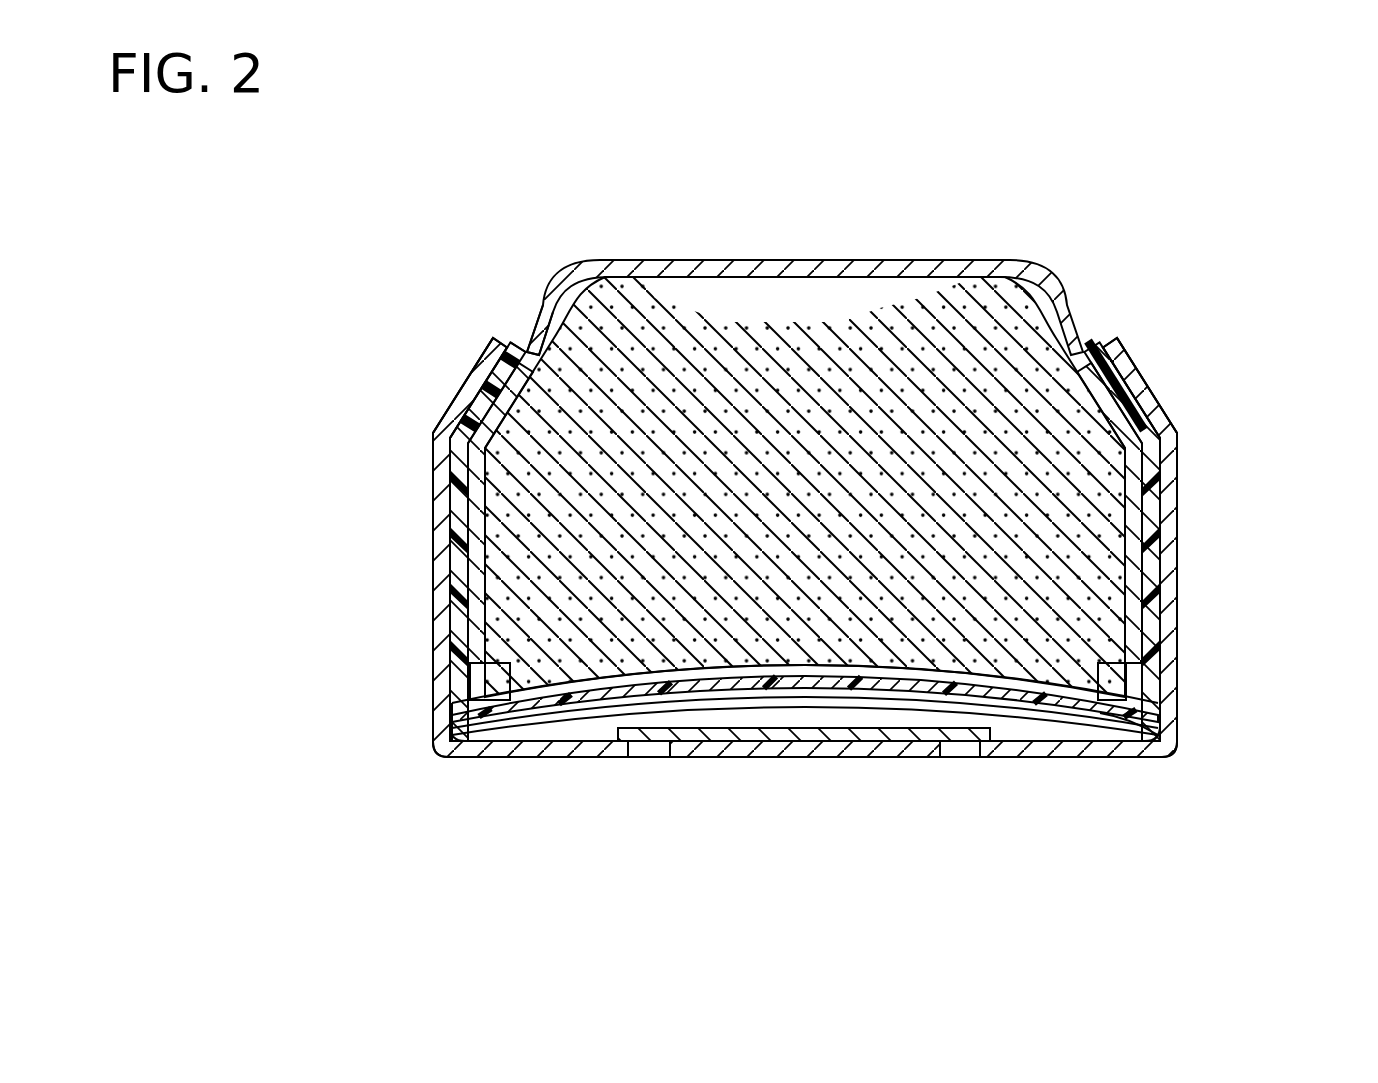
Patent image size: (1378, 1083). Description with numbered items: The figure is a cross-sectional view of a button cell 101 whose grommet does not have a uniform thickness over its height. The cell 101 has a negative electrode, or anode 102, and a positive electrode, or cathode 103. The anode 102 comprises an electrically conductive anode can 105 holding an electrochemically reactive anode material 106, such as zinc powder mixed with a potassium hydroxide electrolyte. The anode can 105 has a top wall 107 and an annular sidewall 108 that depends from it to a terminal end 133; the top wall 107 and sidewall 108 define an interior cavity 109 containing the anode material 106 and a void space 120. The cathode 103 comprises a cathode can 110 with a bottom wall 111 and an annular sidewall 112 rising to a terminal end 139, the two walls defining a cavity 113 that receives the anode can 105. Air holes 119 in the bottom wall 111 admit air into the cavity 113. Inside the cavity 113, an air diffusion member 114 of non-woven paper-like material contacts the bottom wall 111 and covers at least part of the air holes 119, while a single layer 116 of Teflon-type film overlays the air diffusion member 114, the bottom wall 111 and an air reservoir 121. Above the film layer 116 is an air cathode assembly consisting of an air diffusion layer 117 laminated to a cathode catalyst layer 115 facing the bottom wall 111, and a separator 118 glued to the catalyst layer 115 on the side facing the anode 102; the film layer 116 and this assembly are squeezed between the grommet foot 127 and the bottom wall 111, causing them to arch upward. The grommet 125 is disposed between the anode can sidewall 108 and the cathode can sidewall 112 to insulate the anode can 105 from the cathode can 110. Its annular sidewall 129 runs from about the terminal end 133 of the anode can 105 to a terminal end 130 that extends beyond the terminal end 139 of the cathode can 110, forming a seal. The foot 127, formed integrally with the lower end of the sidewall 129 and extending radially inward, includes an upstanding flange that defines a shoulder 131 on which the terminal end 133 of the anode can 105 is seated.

The cell 101 is at (1158, 243).
The negative electrode (anode) 102 is at (653, 260).
The positive electrode (cathode) 103 is at (818, 764).
The anode can 105 is at (975, 262).
The electrochemically reactive anode material 106 is at (1042, 407).
The top wall 107 is at (725, 272).
The anode can sidewall 108 is at (1165, 417).
The interior cavity 109 is at (873, 328).
The cathode can 110 is at (458, 737).
The bottom wall 111 is at (1115, 757).
The cathode can sidewall 112 is at (1168, 488).
The cavity 113 is at (1150, 570).
The air diffusion member 114 is at (697, 737).
The cathode catalyst layer 115 is at (470, 690).
The single layer of film 116 is at (455, 712).
The air diffusion layer 117 is at (1150, 737).
The separator 118 is at (1155, 716).
The air holes 119 is at (640, 752).
The void space 120 is at (775, 305).
The air reservoir 121 is at (1000, 735).
The grommet 125 is at (447, 437).
The foot 127 is at (1120, 690).
The grommet sidewall 129 is at (460, 565).
The terminal end of grommet sidewall 130 is at (540, 345).
The shoulder 131 is at (1128, 740).
The terminal end of anode can 133 is at (470, 668).
The terminal end of cathode can 139 is at (530, 300).